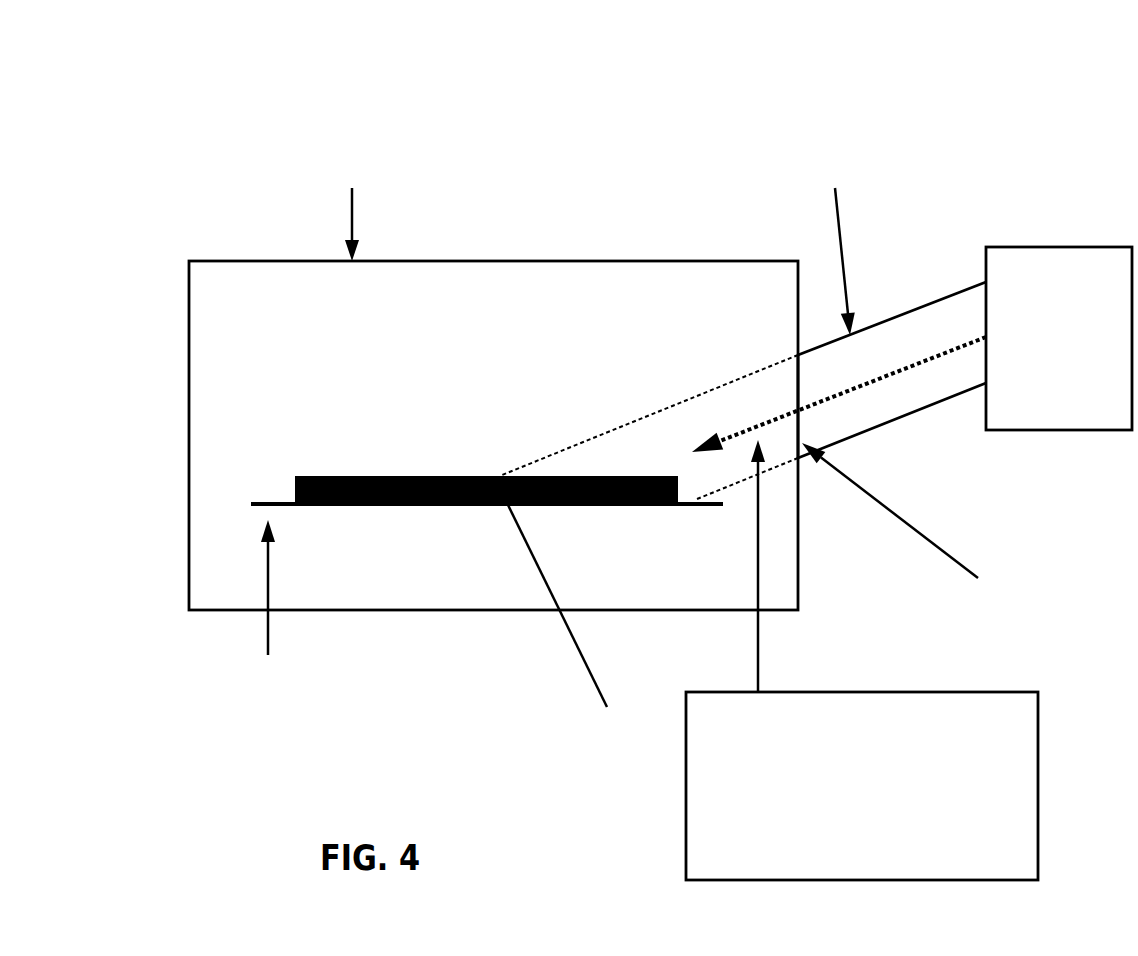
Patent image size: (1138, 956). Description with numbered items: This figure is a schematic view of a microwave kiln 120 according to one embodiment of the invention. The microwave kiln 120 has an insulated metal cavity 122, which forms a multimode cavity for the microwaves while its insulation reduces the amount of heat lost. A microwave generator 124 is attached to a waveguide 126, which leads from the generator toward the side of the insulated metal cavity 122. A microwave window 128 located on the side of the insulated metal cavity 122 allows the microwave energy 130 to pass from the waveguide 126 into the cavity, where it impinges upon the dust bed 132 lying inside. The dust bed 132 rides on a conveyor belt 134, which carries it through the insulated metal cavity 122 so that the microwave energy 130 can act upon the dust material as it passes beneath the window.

The microwave kiln 120 is at (428, 27).
The insulated metal cavity 122 is at (395, 259).
The microwave generator 124 is at (1073, 247).
The waveguide 126 is at (914, 307).
The microwave window 128 is at (1013, 580).
The microwave energy 130 is at (787, 414).
The dust bed 132 is at (617, 705).
The conveyor belt 134 is at (293, 660).